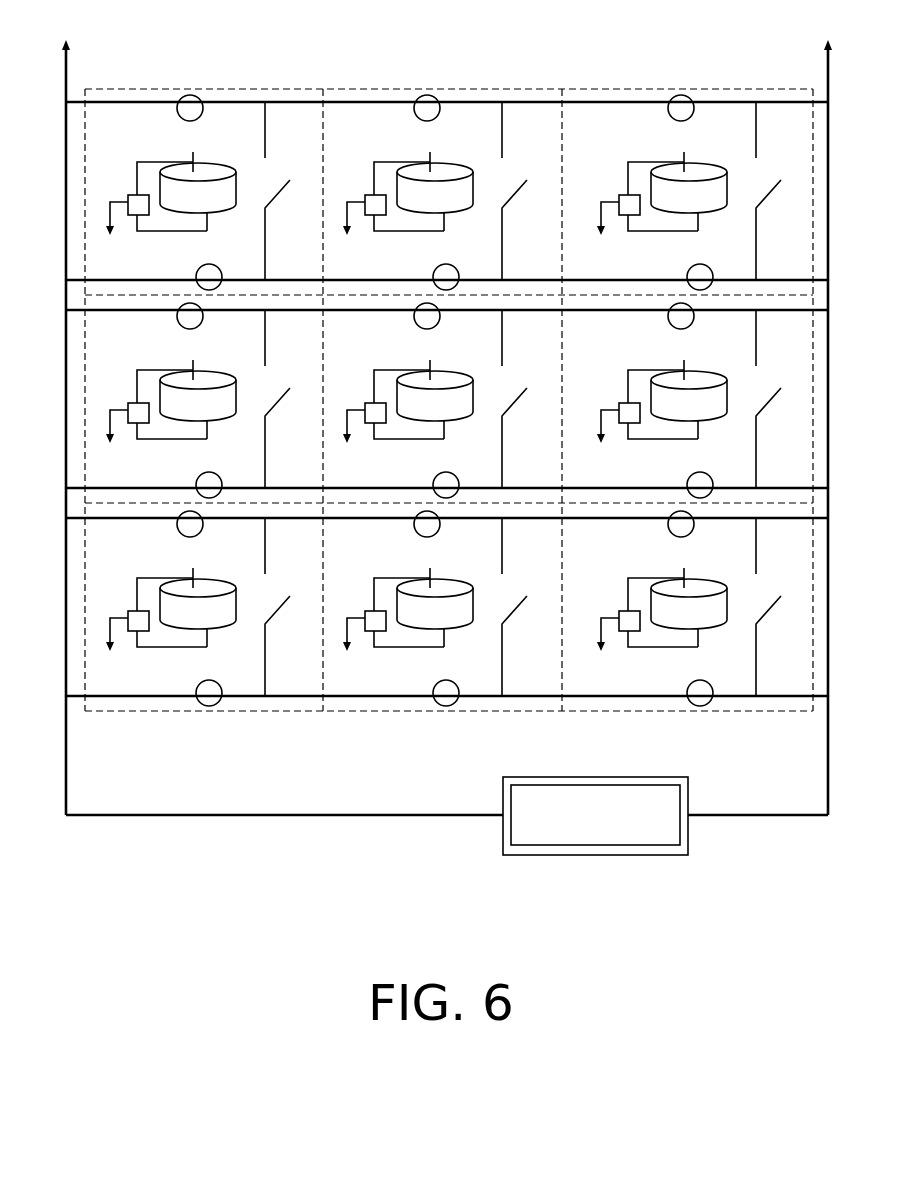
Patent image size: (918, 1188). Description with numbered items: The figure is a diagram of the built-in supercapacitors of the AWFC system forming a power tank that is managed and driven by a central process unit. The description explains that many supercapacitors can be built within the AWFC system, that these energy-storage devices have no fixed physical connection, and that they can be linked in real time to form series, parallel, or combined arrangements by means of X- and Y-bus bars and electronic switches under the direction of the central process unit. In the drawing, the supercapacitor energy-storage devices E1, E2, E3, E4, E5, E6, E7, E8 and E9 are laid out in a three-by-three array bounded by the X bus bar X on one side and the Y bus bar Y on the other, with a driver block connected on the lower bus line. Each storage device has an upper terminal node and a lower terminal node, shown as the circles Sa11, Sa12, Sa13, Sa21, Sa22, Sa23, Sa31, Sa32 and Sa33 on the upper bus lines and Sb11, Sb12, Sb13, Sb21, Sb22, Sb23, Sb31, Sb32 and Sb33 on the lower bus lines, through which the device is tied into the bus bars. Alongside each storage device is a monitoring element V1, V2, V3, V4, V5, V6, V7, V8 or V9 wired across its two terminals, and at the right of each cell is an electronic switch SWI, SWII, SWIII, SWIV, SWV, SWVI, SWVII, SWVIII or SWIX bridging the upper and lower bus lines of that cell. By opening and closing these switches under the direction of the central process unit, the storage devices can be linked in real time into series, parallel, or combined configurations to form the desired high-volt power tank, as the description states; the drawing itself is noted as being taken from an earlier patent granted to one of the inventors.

The driver / X axis X is at (597, 855).
The Y axis Y is at (829, 431).
The battery cell E1 is at (198, 191).
The battery cell E2 is at (435, 191).
The battery cell E3 is at (689, 191).
The battery cell E4 is at (198, 399).
The battery cell E5 is at (435, 399).
The battery cell E6 is at (689, 399).
The battery cell E7 is at (198, 607).
The battery cell E8 is at (435, 607).
The battery cell E9 is at (689, 607).
The terminal a switch node Sa11 is at (193, 121).
The terminal a switch node Sa12 is at (446, 128).
The terminal a switch node Sa13 is at (700, 128).
The terminal a switch node Sa21 is at (209, 336).
The terminal a switch node Sa22 is at (446, 336).
The terminal a switch node Sa23 is at (700, 336).
The terminal a switch node Sa31 is at (209, 544).
The terminal a switch node Sa32 is at (446, 544).
The terminal a switch node Sa33 is at (700, 544).
The terminal b switch node Sb11 is at (209, 264).
The terminal b switch node Sb12 is at (461, 258).
The terminal b switch node Sb13 is at (715, 258).
The terminal b switch node Sb21 is at (224, 466).
The terminal b switch node Sb22 is at (461, 466).
The terminal b switch node Sb23 is at (715, 466).
The terminal b switch node Sb31 is at (224, 674).
The terminal b switch node Sb32 is at (461, 674).
The terminal b switch node Sb33 is at (715, 674).
The voltage sensor V1 is at (156, 198).
The voltage sensor V2 is at (393, 198).
The voltage sensor V3 is at (647, 198).
The voltage sensor V4 is at (156, 406).
The voltage sensor V5 is at (393, 406).
The voltage sensor V6 is at (647, 406).
The voltage sensor V7 is at (156, 614).
The voltage sensor V8 is at (393, 614).
The voltage sensor V9 is at (647, 614).
The switch SWI is at (285, 191).
The switch SWII is at (523, 191).
The switch SWIII is at (779, 191).
The switch SWIV is at (289, 399).
The switch SWV is at (524, 399).
The switch SWVI is at (779, 399).
The switch SWVII is at (289, 607).
The switch SWVIII is at (528, 607).
The switch SWIX is at (779, 607).